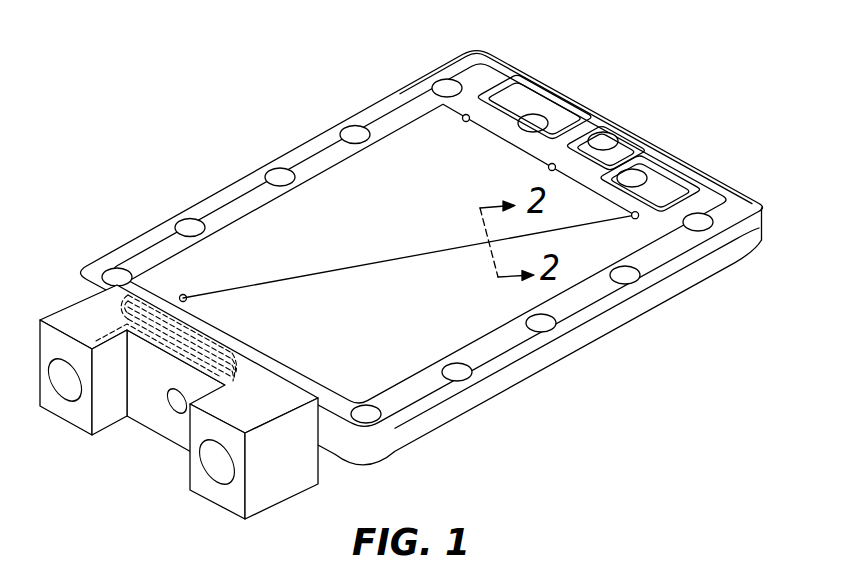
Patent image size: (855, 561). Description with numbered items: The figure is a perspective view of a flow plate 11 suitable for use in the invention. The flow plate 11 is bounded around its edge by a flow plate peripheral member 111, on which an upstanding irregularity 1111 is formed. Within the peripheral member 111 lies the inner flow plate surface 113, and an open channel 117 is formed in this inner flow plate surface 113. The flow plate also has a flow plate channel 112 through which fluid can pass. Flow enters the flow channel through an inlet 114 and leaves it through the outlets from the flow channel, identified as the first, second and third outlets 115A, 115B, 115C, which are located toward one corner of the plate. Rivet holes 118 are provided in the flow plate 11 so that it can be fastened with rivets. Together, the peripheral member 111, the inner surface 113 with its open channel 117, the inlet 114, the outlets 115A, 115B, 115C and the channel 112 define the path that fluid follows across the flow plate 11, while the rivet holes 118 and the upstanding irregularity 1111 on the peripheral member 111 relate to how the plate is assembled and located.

The flow plate 11 is at (193, 155).
The flow plate peripheral member 111 is at (523, 347).
The upstanding irregularity on the flow plate peripheral member 1111 is at (600, 298).
The flow plate channel 112 is at (400, 162).
The inner flow plate surface 113 is at (399, 225).
The inlet to flow channel 114 is at (182, 295).
The outlet from flow channel 115A is at (533, 77).
The outlet from flow channel 115B is at (622, 128).
The outlet from flow channel 115C is at (703, 185).
The open channel in the inner flow plate surface 117 is at (323, 272).
The rivet holes 118 is at (381, 418).